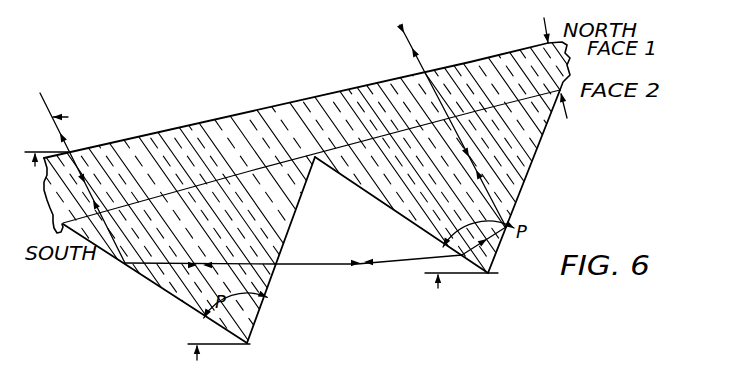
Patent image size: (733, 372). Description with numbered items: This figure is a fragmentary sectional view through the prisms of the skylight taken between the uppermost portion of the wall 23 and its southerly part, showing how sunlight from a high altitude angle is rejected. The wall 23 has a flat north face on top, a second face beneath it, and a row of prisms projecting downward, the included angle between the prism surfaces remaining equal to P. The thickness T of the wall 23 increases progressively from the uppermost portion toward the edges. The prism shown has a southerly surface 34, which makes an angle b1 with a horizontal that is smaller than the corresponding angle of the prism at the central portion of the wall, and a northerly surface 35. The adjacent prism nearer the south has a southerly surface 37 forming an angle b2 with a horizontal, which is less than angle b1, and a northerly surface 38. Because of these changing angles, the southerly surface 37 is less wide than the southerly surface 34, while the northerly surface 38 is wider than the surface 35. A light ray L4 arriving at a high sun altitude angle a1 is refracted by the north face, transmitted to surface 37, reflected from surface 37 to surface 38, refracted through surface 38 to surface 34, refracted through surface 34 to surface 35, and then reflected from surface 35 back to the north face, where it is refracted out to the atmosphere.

The wall 23 is at (280, 113).
The southerly surface 34 is at (390, 224).
The surface 35 is at (519, 182).
The southerly surface 37 is at (158, 284).
The northerly surface 38 is at (291, 228).
The light ray L4 is at (78, 165).
The sun altitude angle a1 is at (46, 144).
The angle b1 is at (461, 287).
The angle b2 is at (217, 339).
The thickness T is at (561, 76).